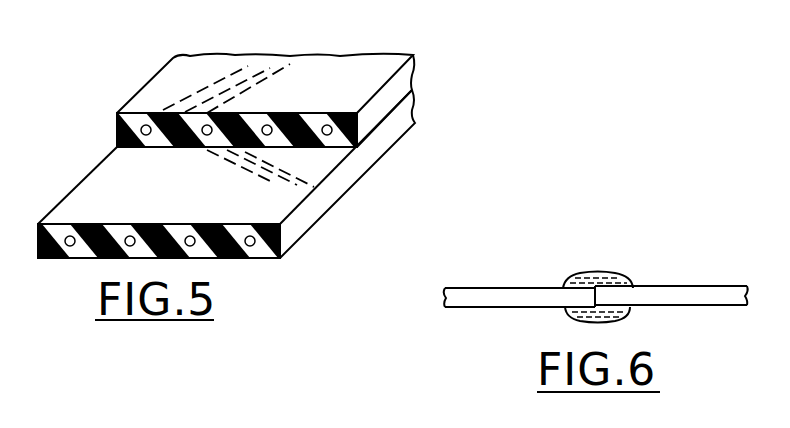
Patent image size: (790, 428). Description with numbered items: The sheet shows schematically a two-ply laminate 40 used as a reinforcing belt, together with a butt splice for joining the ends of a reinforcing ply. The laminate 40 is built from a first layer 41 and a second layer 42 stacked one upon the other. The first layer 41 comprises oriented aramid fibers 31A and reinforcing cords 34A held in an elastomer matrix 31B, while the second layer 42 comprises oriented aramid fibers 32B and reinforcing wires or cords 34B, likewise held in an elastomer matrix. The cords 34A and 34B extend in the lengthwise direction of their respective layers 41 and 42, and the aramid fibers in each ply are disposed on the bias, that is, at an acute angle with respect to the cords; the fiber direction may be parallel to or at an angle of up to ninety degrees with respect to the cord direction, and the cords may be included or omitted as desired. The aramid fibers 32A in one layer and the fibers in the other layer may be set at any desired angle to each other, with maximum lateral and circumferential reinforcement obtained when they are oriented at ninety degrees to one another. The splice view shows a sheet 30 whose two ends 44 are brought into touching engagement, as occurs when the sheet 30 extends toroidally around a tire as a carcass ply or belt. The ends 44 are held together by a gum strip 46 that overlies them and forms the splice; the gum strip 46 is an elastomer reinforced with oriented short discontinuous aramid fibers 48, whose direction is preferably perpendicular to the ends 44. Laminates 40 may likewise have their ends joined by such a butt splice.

In FIG. 6, the sheet 30 is at (686, 286).
In FIG. 5, the oriented aramid fibers 31A is at (407, 110).
In FIG. 5, the elastomer matrix 31B is at (405, 78).
In FIG. 5, the aramid fibers 32A is at (224, 157).
In FIG. 5, the oriented aramid fibers 32B is at (296, 58).
In FIG. 5, the reinforcing cords 34A is at (127, 247).
In FIG. 5, the reinforcing wires or cords 34B is at (270, 136).
In FIG. 5, the two-ply laminate 40 is at (512, 73).
In FIG. 5, the first layer 41 is at (83, 200).
In FIG. 5, the second layer 42 is at (155, 97).
In FIG. 6, the ends 44 is at (597, 291).
In FIG. 6, the gum strip 46 is at (625, 312).
In FIG. 6, the oriented short discontinuous aramid fibers 48 is at (604, 272).